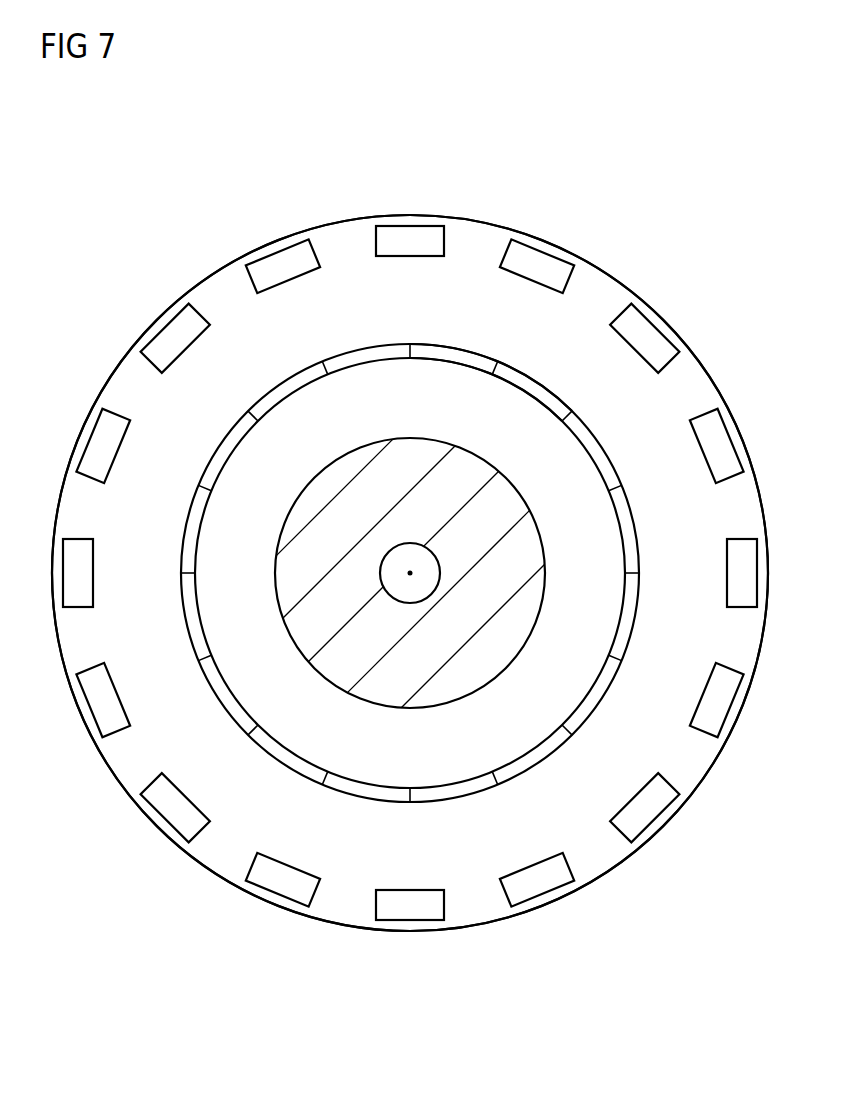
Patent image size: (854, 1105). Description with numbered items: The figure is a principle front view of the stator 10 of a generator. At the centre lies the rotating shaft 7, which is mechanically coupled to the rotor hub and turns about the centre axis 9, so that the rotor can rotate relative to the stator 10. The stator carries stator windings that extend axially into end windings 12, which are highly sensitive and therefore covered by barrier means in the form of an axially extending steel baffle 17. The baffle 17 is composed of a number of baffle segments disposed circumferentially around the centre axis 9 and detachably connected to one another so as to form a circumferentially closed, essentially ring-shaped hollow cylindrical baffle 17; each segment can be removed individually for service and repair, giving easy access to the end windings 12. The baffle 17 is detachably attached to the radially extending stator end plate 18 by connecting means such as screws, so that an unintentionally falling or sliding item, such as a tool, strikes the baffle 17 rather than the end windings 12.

The stator 10 is at (633, 252).
The stator end plate 18 is at (697, 757).
The end windings 12 is at (632, 823).
The baffle 17 is at (424, 322).
The rotating shaft 7 is at (414, 447).
The centre axis 9 is at (410, 572).